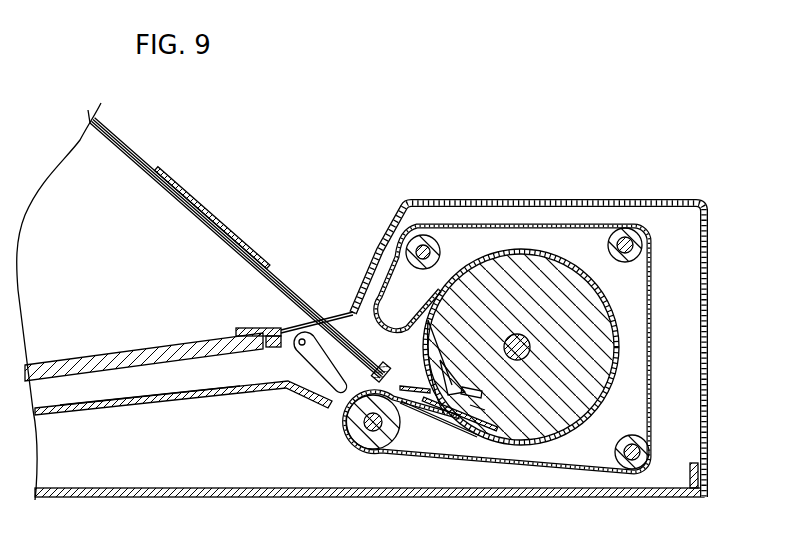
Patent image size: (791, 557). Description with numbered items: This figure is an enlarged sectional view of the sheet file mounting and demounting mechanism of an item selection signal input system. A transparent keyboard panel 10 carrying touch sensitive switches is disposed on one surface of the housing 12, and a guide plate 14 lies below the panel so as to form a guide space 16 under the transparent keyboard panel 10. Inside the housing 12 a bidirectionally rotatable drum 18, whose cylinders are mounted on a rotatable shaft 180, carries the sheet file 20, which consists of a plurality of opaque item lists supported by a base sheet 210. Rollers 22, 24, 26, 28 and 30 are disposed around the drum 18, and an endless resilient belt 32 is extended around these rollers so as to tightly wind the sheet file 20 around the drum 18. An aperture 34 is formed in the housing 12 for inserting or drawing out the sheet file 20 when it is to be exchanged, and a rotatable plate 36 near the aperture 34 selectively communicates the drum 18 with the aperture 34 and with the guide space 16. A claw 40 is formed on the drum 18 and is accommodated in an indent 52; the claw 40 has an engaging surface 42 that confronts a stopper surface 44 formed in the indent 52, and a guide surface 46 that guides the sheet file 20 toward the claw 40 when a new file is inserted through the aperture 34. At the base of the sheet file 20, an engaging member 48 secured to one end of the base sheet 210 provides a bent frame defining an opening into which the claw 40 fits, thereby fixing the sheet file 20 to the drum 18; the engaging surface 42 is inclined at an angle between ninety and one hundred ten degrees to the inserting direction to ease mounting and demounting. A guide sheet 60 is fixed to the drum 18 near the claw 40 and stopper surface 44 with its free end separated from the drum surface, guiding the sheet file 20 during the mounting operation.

The transparent keyboard panel 10 is at (88, 360).
The housing 12 is at (489, 203).
The guide plate 14 is at (177, 400).
The guide space 16 is at (123, 382).
The bidirectionally rotatable drum 18 is at (518, 262).
The rotatable shaft 180 is at (530, 347).
The sheet file 20 is at (137, 157).
The base sheet 210 is at (182, 190).
The roller 22 is at (380, 282).
The roller 24 is at (420, 232).
The roller 26 is at (628, 232).
The roller 28 is at (640, 440).
The roller 30 is at (352, 437).
The endless resilient belt 32 is at (650, 290).
The aperture 34 is at (330, 312).
The rotatable plate 36 is at (317, 358).
The claw 40 is at (440, 375).
The engaging surface 42 is at (468, 400).
The stopper surface 44 is at (468, 410).
The guide surface 46 is at (433, 357).
The engaging member 48 is at (402, 385).
The indent 52 is at (483, 410).
The guide sheet 60 is at (436, 420).